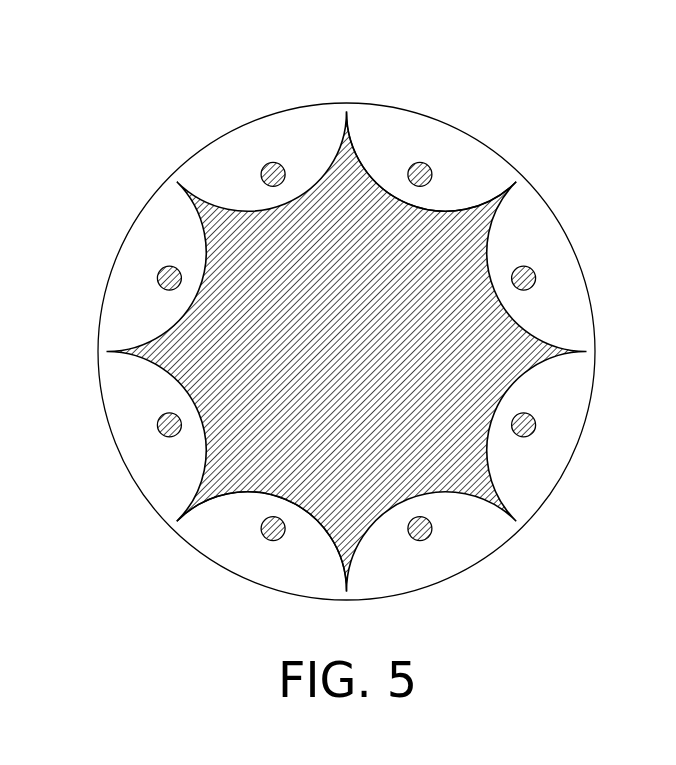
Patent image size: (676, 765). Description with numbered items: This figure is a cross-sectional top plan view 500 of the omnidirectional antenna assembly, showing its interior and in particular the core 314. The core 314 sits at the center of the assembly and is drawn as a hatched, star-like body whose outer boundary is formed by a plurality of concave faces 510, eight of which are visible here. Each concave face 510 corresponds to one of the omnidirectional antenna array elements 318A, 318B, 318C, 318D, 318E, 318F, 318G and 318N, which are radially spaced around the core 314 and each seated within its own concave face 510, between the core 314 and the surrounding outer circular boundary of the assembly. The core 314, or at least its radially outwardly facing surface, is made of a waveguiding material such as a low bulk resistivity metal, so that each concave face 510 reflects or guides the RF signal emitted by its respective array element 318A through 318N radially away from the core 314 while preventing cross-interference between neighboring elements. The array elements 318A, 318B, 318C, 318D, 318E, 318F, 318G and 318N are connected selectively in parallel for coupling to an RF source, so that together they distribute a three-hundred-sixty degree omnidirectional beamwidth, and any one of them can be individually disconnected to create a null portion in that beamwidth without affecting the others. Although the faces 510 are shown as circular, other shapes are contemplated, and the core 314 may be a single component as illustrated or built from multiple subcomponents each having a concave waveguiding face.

The cross-sectional view of assembly 500 is at (98, 127).
The core 314 is at (362, 344).
The concave face 510 is at (457, 198).
The omnidirectional antenna array element 318A is at (158, 423).
The omnidirectional antenna array element 318B is at (269, 541).
The omnidirectional antenna array element 318C is at (425, 541).
The omnidirectional antenna array element 318D is at (535, 430).
The omnidirectional antenna array element 318E is at (536, 276).
The omnidirectional antenna array element 318F is at (422, 162).
The omnidirectional antenna array element 318G is at (272, 162).
The omnidirectional antenna array element 318N is at (157, 276).